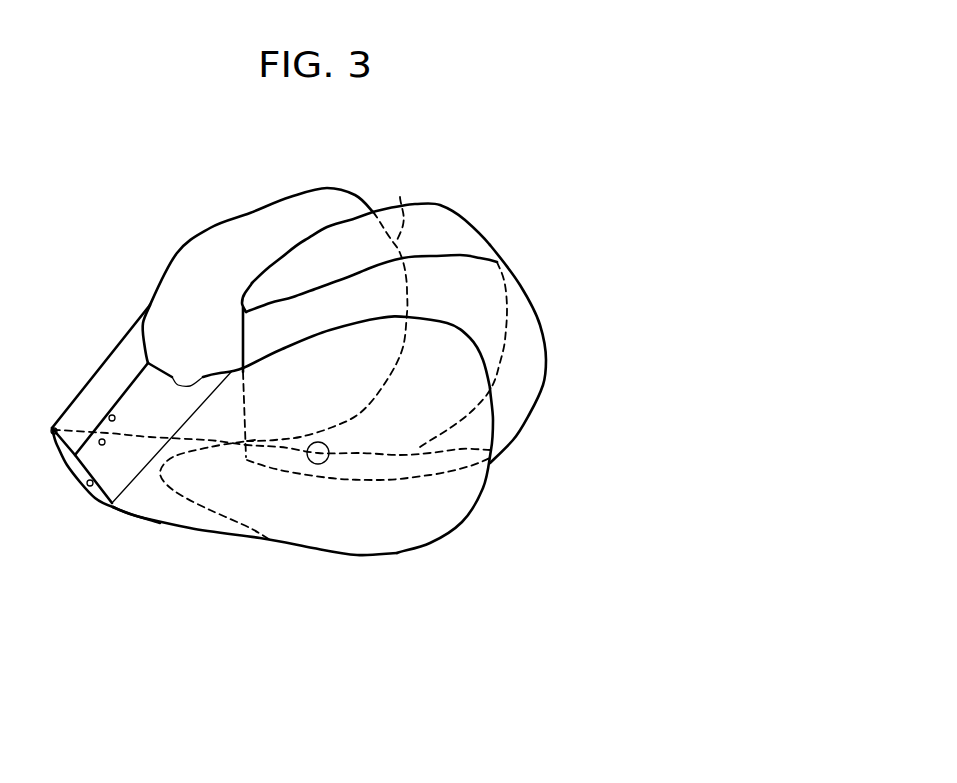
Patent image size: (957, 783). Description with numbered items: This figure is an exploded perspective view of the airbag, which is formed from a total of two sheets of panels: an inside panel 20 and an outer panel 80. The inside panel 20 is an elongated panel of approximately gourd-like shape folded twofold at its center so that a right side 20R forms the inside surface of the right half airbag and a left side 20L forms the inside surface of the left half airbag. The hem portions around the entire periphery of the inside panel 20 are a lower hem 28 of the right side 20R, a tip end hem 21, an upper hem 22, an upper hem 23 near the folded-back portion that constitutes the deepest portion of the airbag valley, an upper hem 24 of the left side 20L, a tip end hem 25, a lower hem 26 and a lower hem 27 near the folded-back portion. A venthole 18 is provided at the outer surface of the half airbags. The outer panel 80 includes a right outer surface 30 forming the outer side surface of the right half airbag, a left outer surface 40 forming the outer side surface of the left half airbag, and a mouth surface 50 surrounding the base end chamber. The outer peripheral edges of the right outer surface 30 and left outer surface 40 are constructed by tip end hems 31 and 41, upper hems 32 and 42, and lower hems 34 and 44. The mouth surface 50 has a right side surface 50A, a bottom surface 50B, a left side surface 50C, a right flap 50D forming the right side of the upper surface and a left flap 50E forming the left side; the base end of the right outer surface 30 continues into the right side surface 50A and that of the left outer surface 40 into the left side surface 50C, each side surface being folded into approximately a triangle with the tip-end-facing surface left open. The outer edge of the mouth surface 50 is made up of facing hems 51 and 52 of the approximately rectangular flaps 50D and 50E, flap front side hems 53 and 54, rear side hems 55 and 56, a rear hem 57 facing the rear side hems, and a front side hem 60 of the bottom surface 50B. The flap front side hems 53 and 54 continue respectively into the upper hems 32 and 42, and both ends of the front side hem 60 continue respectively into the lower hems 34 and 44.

The venthole 18 is at (328, 459).
The inside panel 20 is at (458, 335).
The left side of inside panel 20L is at (438, 222).
The right side of inside panel 20R is at (545, 354).
The tip end hem 21 is at (547, 359).
The upper hem 22 is at (369, 285).
The upper hem near folded-back portion 23 is at (256, 303).
The upper hem of left side 24 is at (331, 227).
The tip end hem 25 is at (497, 262).
The lower hem 26 is at (418, 445).
The lower hem near folded-back portion 27 is at (247, 459).
The lower hem of right side 28 is at (383, 481).
The right outer surface 30 is at (294, 458).
The tip end hem 31 is at (490, 479).
The upper hem 32 is at (362, 321).
The lower hem 34 is at (378, 558).
The left outer surface 40 is at (280, 297).
The tip end hem 41 is at (400, 205).
The upper hem 42 is at (212, 232).
The lower hem 44 is at (360, 418).
The mouth surface 50 is at (149, 445).
The right side surface 50A is at (140, 504).
The bottom surface 50B is at (95, 503).
The left side surface 50C is at (87, 392).
The right flap 50D is at (180, 392).
The left flap 50E is at (129, 330).
The facing hem 51 is at (105, 445).
The facing hem 52 is at (109, 418).
The flap front side hem 53 is at (208, 398).
The flap front side hem 54 is at (152, 336).
The rear side hem 55 is at (93, 483).
The rear side hem 56 is at (53, 428).
The rear hem 57 is at (79, 484).
The front side hem of bottom portion 60 is at (185, 491).
The outer panel 80 is at (360, 458).